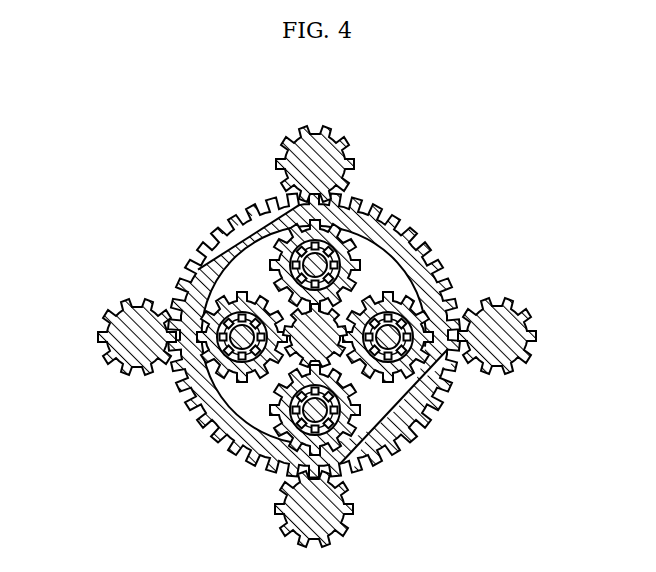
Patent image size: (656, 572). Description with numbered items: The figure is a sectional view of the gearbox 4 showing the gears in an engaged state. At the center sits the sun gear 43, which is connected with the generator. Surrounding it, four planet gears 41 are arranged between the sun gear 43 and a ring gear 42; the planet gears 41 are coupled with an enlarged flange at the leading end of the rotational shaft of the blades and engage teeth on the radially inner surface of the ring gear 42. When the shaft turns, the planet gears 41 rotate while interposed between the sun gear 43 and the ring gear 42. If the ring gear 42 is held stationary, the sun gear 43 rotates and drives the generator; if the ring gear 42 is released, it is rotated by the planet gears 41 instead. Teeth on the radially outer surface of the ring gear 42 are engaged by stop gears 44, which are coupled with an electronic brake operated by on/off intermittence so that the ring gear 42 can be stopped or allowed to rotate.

The gearbox 4 is at (315, 336).
The planet gears 41 is at (437, 404).
The ring gear 42 is at (325, 315).
The sun gear 43 is at (260, 423).
The stop gear 44 is at (343, 165).